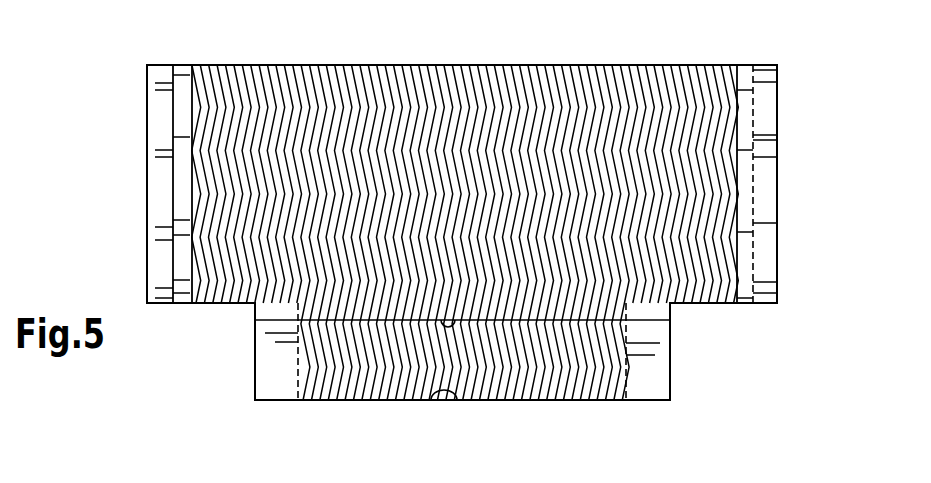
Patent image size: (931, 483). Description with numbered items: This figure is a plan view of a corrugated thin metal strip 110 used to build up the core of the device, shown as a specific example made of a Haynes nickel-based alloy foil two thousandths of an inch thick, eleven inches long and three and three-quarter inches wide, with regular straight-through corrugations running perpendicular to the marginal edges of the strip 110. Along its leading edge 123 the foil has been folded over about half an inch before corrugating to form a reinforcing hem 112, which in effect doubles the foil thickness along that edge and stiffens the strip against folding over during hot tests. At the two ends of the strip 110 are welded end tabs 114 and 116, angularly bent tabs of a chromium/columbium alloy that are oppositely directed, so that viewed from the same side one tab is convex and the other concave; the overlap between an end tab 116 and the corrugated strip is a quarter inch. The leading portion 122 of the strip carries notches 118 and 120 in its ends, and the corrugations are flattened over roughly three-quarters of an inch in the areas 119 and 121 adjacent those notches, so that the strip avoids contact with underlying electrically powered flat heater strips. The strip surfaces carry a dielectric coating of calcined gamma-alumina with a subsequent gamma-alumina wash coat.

The corrugated strip 110 is at (462, 62).
The hem 112 is at (446, 314).
The end tab 114 is at (158, 208).
The end tab 116 is at (773, 250).
The notch 118 is at (205, 344).
The flattened area 119 is at (277, 365).
The notch 120 is at (713, 345).
The flattened area 121 is at (652, 368).
The leading portion 122 is at (552, 372).
The leading edge 123 is at (431, 402).